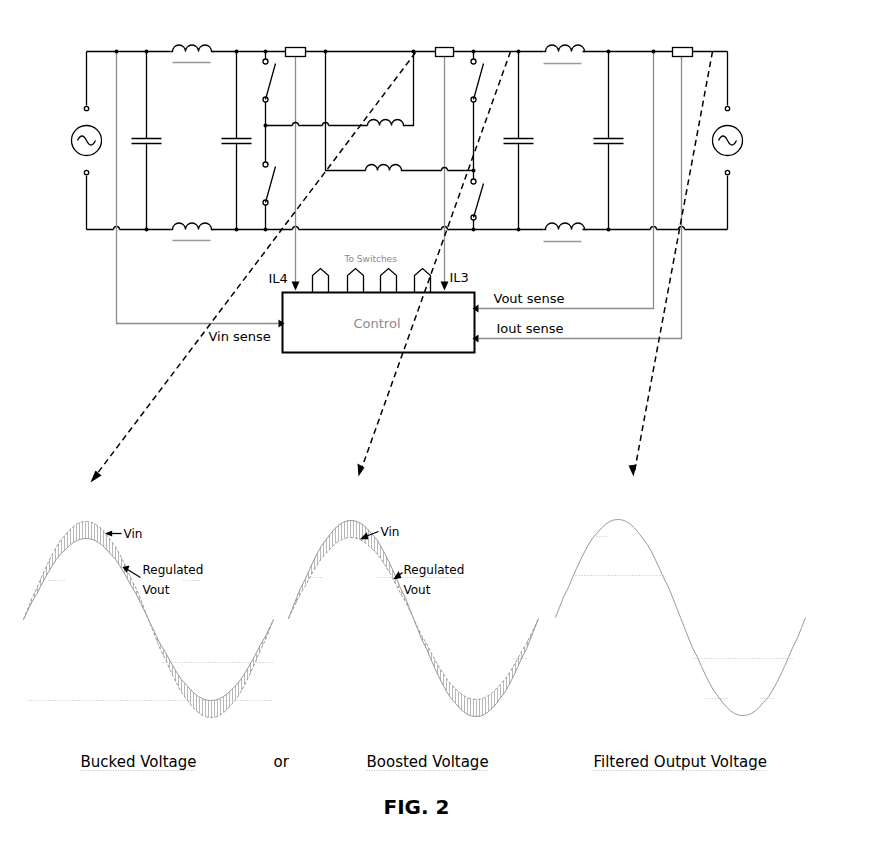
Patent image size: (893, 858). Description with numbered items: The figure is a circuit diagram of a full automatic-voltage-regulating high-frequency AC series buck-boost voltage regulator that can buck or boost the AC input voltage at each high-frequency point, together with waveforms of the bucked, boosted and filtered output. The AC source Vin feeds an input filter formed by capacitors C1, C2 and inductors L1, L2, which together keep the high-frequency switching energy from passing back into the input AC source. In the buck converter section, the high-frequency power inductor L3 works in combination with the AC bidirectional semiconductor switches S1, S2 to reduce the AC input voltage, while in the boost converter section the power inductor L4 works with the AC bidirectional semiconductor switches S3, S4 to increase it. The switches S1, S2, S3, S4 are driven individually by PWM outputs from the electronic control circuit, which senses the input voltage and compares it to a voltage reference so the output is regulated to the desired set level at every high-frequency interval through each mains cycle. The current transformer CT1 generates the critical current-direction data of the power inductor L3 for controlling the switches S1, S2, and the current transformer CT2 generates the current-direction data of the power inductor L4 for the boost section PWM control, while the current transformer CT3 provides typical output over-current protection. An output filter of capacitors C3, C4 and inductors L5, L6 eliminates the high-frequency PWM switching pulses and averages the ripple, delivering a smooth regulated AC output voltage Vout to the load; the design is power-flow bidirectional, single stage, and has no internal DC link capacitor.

The input filter inductor L1 is at (192, 46).
The input filter inductor L2 is at (192, 224).
The power inductor L3 is at (391, 89).
The power inductor L4 is at (420, 160).
The output filter inductor L5 is at (565, 46).
The output filter inductor L6 is at (565, 225).
The input filter capacitor C1 is at (157, 141).
The input filter capacitor C2 is at (226, 141).
The output filter capacitor C3 is at (529, 141).
The output filter capacitor C4 is at (600, 141).
The AC bidirectional semiconductor switch S1 is at (260, 89).
The AC bidirectional semiconductor switch S2 is at (260, 178).
The AC bidirectional semiconductor switch S3 is at (468, 111).
The AC bidirectional semiconductor switch S4 is at (486, 200).
The current transformer CT1 is at (445, 43).
The current transformer CT2 is at (297, 43).
The current transformer CT3 is at (682, 43).
The input voltage source Vin is at (80, 141).
The output voltage / load Vout is at (740, 141).